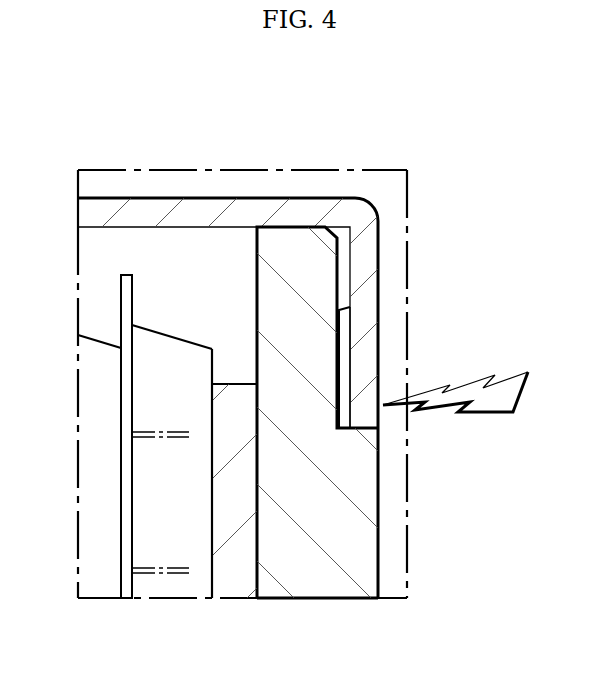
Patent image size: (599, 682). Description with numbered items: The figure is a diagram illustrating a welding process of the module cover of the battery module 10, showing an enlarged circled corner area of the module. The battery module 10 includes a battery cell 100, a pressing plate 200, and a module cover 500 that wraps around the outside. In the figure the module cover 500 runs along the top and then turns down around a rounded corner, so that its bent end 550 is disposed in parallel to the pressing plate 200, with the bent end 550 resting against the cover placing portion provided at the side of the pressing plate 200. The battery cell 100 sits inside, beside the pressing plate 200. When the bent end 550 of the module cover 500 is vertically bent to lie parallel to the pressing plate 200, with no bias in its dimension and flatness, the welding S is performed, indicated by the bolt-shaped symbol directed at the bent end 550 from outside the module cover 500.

The battery module 10 is at (80, 143).
The battery cell 100 is at (182, 583).
The pressing plate 200 is at (362, 498).
The module cover 500 is at (213, 198).
The bent end of module cover 550 is at (362, 313).
The welding S is at (463, 392).